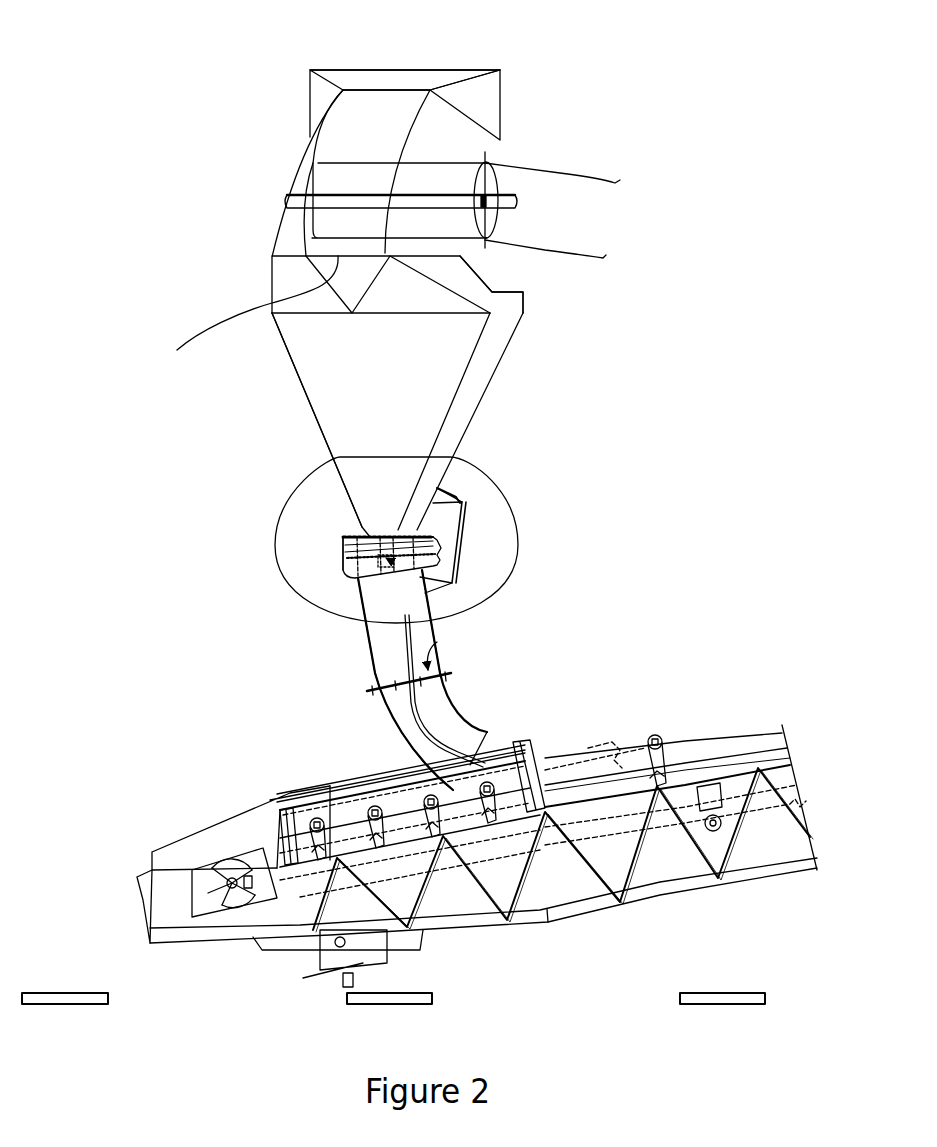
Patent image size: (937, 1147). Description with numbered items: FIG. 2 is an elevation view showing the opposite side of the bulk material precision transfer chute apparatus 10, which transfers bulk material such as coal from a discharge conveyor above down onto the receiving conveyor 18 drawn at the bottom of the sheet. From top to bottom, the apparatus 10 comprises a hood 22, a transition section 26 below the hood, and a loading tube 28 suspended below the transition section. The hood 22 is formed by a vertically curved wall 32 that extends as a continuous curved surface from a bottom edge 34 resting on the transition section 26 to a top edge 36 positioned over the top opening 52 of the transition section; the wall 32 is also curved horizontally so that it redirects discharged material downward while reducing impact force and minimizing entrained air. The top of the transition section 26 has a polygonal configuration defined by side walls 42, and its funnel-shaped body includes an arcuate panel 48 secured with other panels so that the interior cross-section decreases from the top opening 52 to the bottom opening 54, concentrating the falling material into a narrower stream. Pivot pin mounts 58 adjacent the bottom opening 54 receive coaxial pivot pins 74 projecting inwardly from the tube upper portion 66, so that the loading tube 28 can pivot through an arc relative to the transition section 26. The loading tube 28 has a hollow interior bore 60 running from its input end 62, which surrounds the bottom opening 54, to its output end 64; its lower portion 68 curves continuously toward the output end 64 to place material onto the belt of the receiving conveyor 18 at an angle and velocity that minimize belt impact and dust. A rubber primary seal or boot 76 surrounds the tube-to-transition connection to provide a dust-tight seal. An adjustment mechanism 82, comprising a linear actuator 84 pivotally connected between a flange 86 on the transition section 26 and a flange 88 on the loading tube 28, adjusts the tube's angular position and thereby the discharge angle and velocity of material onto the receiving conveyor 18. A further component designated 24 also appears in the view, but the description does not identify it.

The bulk material precision transfer chute apparatus 10 is at (218, 182).
The receiving conveyor 18 is at (690, 733).
The hood 22 is at (490, 103).
The intermediate housing section 24 is at (278, 280).
The transition section 26 is at (323, 387).
The loading tube 28 is at (382, 649).
The vertically curved wall 32 is at (355, 118).
The bottom edge 34 is at (244, 315).
The top edge 36 is at (393, 68).
The side walls 42 is at (512, 306).
The arcuate panel 48 is at (332, 418).
The top opening 52 is at (493, 287).
The bottom opening 54 is at (377, 583).
The pivot pin mounts 58 is at (343, 555).
The hollow interior bore 60 is at (437, 642).
The input end 62 is at (360, 535).
The output end 64 is at (487, 735).
The upper portion 66 is at (373, 673).
The lower portion 68 is at (388, 727).
The coaxial pivot pins 74 is at (390, 583).
The rubber primary seal or boot 76 is at (343, 540).
The adjustment mechanism 82 is at (483, 555).
The linear actuator 84 is at (463, 530).
The flange 86 is at (450, 483).
The flange 88 is at (440, 583).